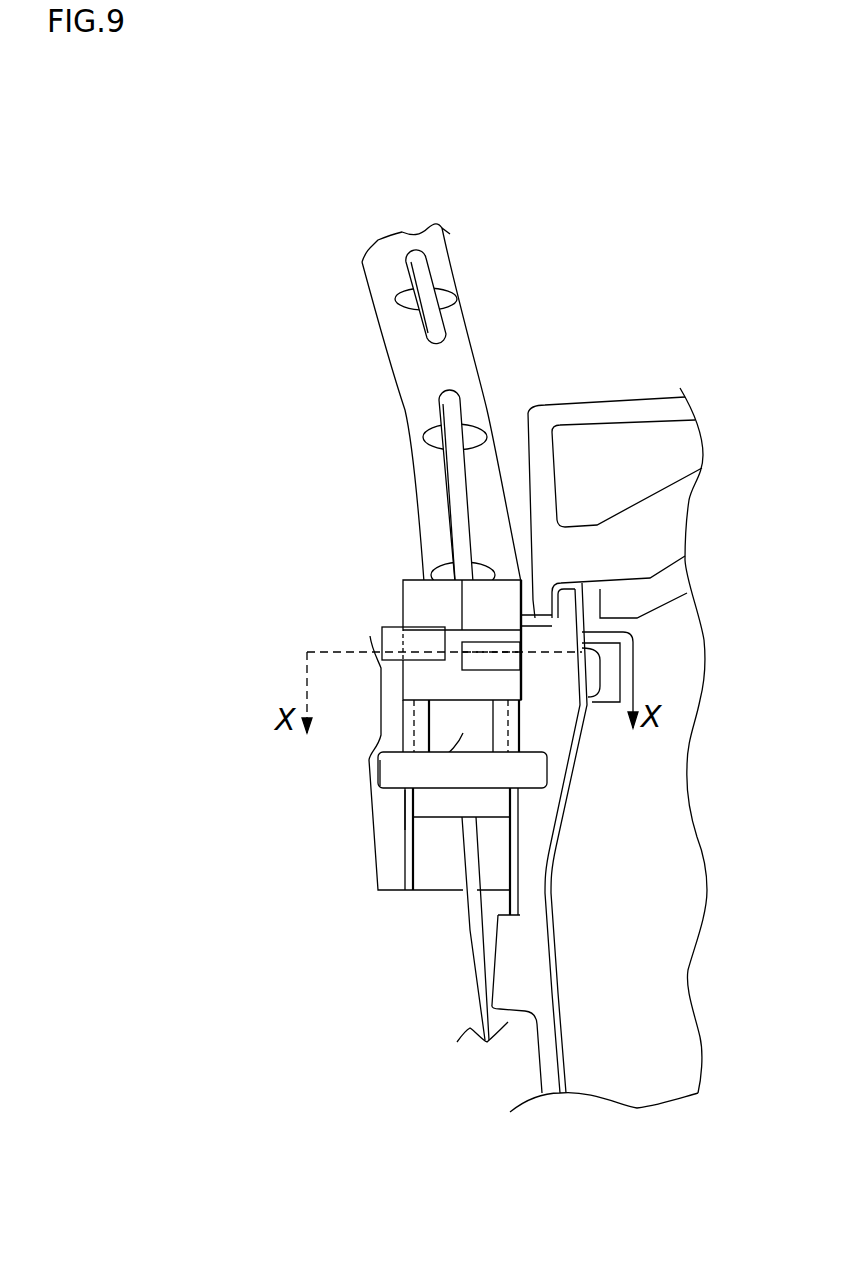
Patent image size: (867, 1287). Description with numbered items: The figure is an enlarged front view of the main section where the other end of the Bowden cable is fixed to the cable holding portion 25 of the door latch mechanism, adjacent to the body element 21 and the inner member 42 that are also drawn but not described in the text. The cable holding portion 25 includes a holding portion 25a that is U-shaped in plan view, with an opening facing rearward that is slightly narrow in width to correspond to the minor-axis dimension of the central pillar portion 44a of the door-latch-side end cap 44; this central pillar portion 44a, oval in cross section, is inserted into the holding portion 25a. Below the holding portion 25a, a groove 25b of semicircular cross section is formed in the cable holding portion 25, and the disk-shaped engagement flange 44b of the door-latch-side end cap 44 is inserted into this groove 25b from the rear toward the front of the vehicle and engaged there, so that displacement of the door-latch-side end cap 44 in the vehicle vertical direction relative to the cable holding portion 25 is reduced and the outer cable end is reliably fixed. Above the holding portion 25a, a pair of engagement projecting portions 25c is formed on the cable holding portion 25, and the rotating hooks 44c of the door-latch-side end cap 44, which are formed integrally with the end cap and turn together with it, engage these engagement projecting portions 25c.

The vehicle body side member 21 is at (592, 403).
The cable holding portion 25 is at (372, 860).
The holding portion 25a is at (463, 733).
The groove 25b is at (399, 794).
The engagement projecting portion 25c is at (535, 642).
The wire strap 42 is at (470, 980).
The door-latch-side end cap 44 is at (393, 370).
The central pillar portion 44a is at (390, 797).
The engagement flange 44b is at (548, 770).
The rotating hook 44c is at (490, 660).